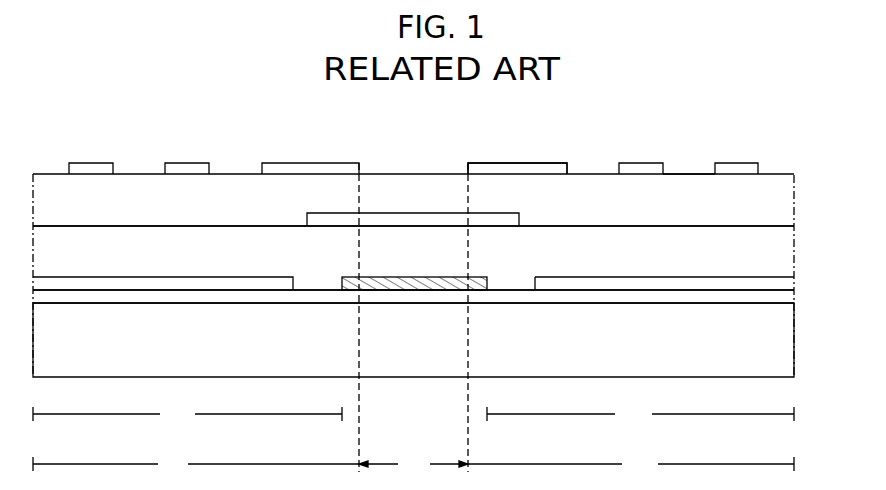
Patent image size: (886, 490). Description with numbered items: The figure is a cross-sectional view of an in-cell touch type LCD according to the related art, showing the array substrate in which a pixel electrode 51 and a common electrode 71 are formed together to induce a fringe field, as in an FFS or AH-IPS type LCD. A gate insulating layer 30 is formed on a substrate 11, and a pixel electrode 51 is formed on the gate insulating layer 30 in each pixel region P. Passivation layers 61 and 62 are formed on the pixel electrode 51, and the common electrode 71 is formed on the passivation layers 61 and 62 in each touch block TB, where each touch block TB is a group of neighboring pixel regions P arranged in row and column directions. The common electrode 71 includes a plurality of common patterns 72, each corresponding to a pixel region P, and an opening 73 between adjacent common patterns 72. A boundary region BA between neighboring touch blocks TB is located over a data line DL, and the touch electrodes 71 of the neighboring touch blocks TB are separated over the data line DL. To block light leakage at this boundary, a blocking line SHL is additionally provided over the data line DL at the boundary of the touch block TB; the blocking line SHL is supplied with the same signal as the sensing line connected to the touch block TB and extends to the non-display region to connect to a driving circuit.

The substrate 11 is at (783, 348).
The gate insulating layer 30 is at (783, 297).
The pixel electrode 51 is at (128, 280).
The passivation layer 61 is at (783, 262).
The passivation layer 62 is at (783, 206).
The common electrode 71 is at (760, 167).
The common pattern 72 is at (507, 169).
The opening 73 is at (679, 171).
The blocking line SHL is at (322, 222).
The data line DL is at (410, 291).
The pixel region P is at (413, 414).
The touch block TB is at (413, 464).
The boundary region BA is at (413, 464).